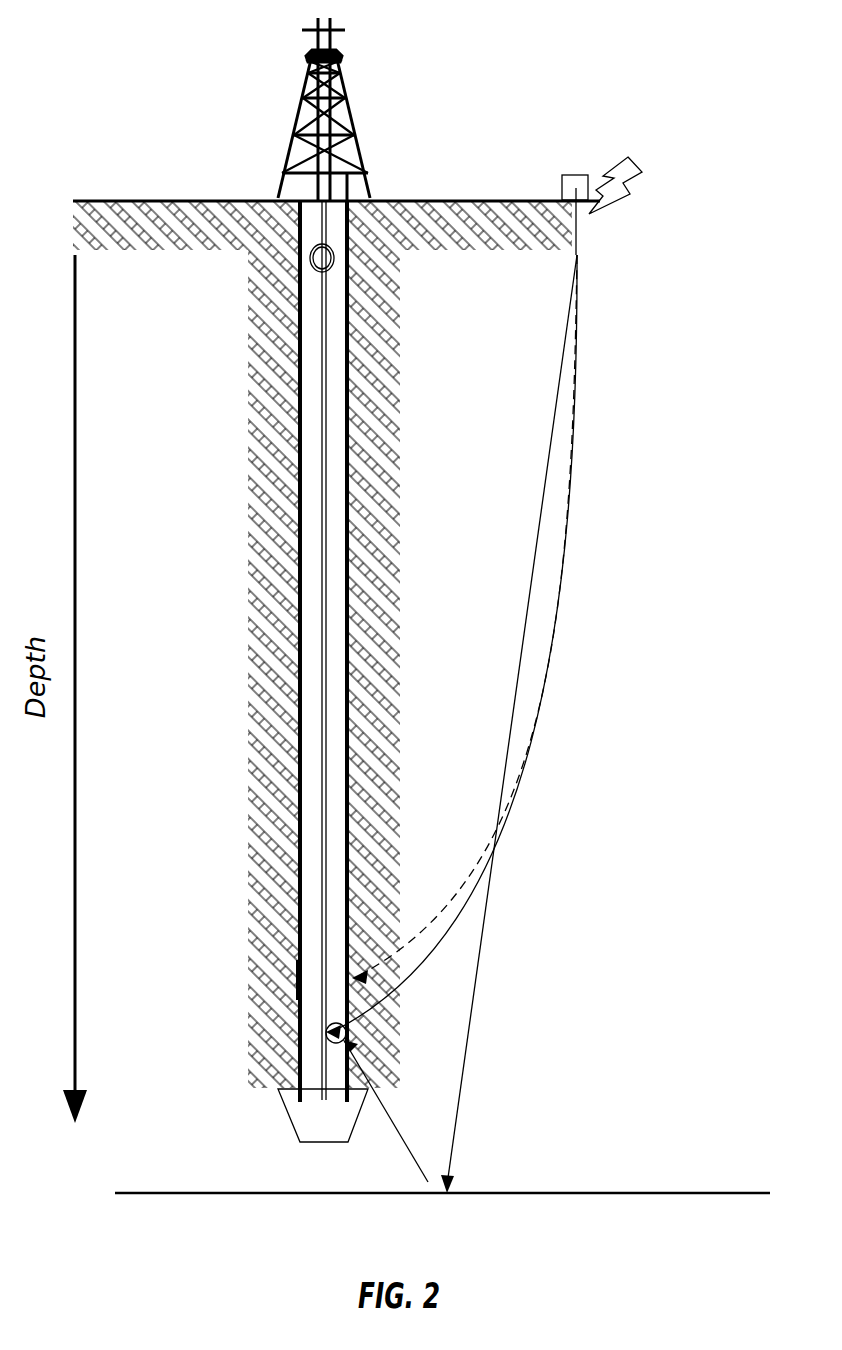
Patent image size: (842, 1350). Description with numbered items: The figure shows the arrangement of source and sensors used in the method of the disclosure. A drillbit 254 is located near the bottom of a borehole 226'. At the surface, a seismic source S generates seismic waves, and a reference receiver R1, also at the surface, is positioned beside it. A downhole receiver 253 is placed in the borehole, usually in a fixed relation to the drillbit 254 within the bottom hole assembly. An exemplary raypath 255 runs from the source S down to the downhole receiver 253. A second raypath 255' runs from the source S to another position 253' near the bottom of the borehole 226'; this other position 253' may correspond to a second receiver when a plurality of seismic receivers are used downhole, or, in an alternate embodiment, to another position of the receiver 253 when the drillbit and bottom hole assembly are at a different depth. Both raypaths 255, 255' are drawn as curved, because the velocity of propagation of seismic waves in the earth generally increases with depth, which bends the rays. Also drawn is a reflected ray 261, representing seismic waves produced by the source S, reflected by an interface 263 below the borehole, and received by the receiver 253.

The reference receiver R1 is at (573, 166).
The surface seismic source S is at (640, 150).
The borehole 226' is at (255, 651).
The another position 253' is at (246, 972).
The downhole receiver 253 is at (392, 1102).
The drillbit 254 is at (292, 1118).
The raypath 255 is at (464, 619).
The raypath 255' is at (451, 647).
The reflected ray 261 is at (462, 1108).
The interface 263 is at (640, 1193).